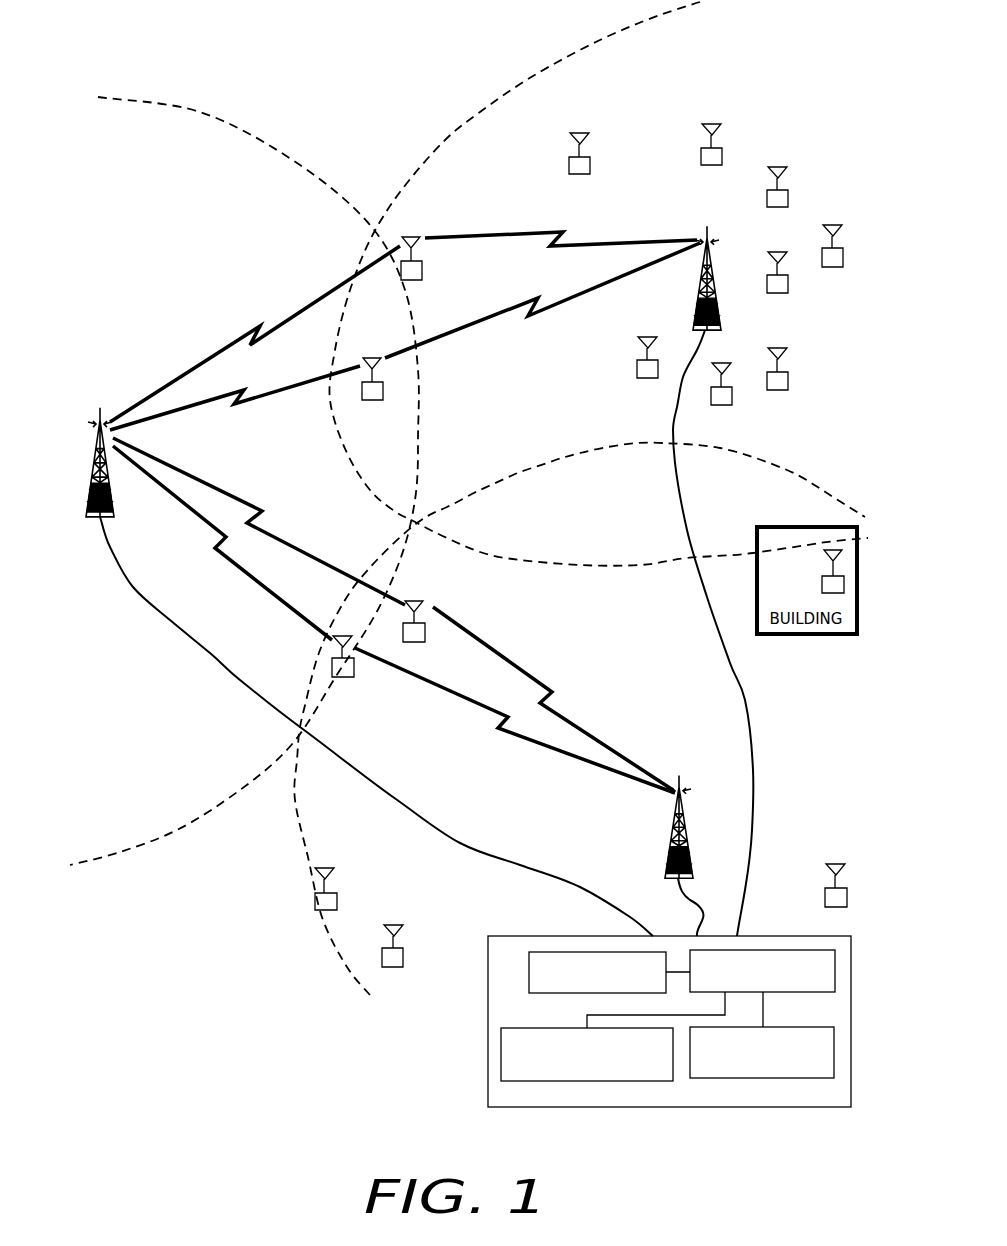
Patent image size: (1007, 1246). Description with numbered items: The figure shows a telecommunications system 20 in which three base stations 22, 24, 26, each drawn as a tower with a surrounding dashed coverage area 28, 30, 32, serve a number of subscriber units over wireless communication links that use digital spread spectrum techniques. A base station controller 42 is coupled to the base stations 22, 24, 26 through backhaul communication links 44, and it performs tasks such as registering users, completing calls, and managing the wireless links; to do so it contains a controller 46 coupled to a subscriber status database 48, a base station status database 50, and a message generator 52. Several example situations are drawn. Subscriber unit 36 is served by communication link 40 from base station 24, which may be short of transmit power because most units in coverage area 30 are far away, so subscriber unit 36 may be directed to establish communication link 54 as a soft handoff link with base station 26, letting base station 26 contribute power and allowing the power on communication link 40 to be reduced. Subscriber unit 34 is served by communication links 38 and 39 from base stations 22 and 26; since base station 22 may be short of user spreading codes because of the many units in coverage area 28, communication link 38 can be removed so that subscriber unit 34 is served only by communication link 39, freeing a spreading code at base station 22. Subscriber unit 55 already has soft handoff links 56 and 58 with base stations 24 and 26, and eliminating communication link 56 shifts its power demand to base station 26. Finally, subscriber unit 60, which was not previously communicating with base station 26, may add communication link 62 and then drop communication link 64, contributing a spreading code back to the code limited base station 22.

The telecommunications system 20 is at (143, 81).
The base station 22 is at (722, 320).
The base station 24 is at (690, 833).
The base station 26 is at (113, 505).
The coverage area 28 is at (532, 80).
The coverage area 30 is at (300, 840).
The coverage area 32 is at (180, 834).
The subscriber unit 34 is at (375, 402).
The subscriber unit 36 is at (425, 640).
The communication link 38 is at (506, 302).
The communication link 39 is at (272, 395).
The communication link 40 is at (545, 680).
The base station controller 42 is at (486, 956).
The backhaul communication links 44 is at (393, 798).
The controller 46 is at (814, 992).
The subscriber status database 48 is at (806, 1028).
The base station status database 50 is at (520, 1028).
The message generator 52 is at (530, 978).
The communication link 54 is at (258, 505).
The subscriber unit 55 is at (355, 677).
The communication link 56 is at (512, 730).
The communication link 58 is at (230, 560).
The subscriber unit 60 is at (422, 282).
The communication link 62 is at (238, 328).
The communication link 64 is at (510, 232).